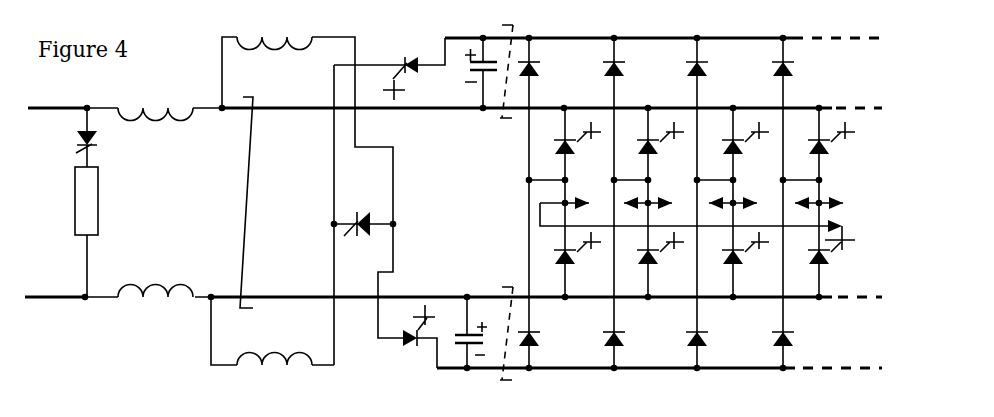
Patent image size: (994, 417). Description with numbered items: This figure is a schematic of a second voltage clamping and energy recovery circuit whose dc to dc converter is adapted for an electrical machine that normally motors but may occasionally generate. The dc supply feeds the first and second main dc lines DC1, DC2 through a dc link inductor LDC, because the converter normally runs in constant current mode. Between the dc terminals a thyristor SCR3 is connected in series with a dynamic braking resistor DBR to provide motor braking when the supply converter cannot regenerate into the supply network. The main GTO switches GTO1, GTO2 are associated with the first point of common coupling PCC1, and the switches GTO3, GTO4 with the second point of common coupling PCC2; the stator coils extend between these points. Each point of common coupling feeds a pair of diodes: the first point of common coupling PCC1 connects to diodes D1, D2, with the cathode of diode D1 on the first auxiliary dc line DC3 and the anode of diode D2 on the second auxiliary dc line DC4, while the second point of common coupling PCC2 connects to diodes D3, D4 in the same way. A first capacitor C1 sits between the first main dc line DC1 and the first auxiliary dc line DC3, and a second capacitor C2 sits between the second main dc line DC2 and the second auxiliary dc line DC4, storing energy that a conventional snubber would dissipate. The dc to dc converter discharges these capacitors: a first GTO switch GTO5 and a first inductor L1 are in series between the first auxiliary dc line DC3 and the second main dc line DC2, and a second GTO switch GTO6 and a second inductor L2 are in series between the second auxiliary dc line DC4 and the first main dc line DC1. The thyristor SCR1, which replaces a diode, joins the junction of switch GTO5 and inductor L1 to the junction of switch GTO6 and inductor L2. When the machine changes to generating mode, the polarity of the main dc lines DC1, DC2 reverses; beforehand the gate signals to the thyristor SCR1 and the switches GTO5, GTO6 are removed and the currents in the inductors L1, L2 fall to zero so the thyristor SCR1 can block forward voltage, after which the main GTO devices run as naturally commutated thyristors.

The first main dc line DC1 is at (455, 95).
The second main dc line DC2 is at (453, 312).
The first auxiliary dc line DC3 is at (663, 26).
The second auxiliary dc line DC4 is at (659, 383).
The dc link inductor LDC is at (155, 203).
The first inductor L1 is at (274, 373).
The second inductor L2 is at (274, 31).
The thyristor SCR1 is at (342, 209).
The thyristor SCR3 is at (118, 148).
The dynamic braking resistor DBR is at (62, 201).
The GTO switch GTO1 is at (565, 144).
The GTO switch GTO2 is at (565, 258).
The GTO switch GTO3 is at (648, 144).
The GTO switch GTO4 is at (648, 258).
The first GTO switch GTO5 is at (399, 66).
The second GTO switch GTO6 is at (392, 341).
The first capacitor C1 is at (470, 73).
The second capacitor C2 is at (462, 332).
The diode D1 is at (540, 83).
The diode D2 is at (538, 352).
The diode D3 is at (624, 83).
The diode D4 is at (622, 352).
The first point of common coupling PCC1 is at (577, 189).
The second point of common coupling PCC2 is at (659, 189).